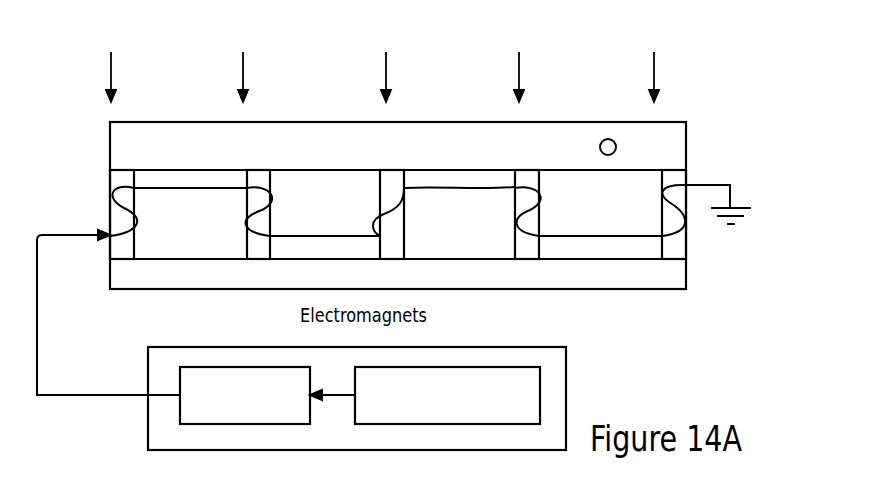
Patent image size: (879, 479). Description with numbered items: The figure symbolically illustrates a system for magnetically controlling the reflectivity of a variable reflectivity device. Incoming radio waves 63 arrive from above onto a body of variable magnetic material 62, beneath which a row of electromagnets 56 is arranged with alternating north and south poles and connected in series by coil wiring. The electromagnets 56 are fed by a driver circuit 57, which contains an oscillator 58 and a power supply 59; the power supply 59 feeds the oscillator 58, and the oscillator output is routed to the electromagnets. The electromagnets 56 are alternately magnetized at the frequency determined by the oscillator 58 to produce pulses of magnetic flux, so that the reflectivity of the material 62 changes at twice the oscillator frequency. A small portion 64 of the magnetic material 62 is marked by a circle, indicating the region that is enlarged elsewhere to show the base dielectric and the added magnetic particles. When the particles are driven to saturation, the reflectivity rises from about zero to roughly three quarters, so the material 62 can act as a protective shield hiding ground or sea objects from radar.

The electromagnets 56 is at (406, 247).
The driver circuit 57 is at (566, 400).
The oscillator 58 is at (240, 367).
The power supply 59 is at (455, 367).
The variable magnetic material 62 is at (110, 152).
The radio wave 63 is at (382, 63).
The portion of the magnetic material 64 is at (617, 146).